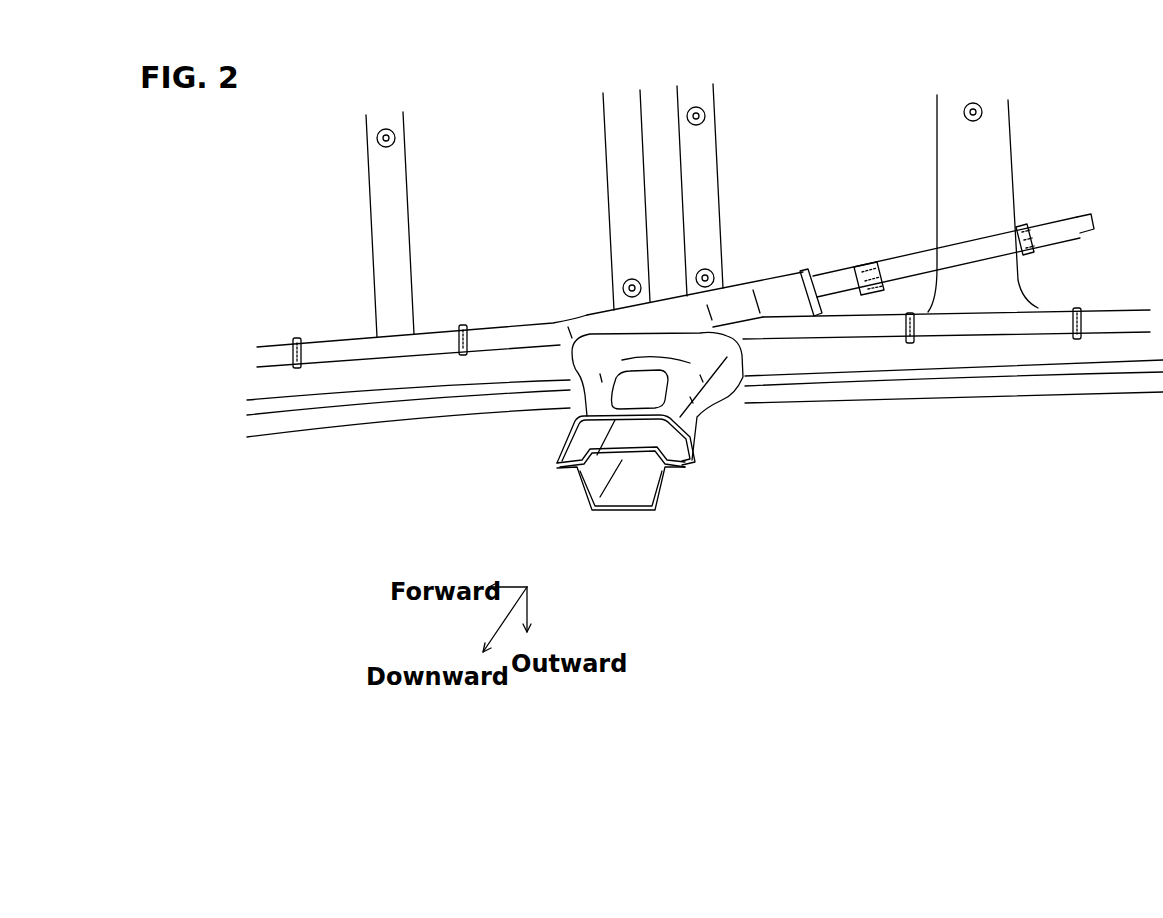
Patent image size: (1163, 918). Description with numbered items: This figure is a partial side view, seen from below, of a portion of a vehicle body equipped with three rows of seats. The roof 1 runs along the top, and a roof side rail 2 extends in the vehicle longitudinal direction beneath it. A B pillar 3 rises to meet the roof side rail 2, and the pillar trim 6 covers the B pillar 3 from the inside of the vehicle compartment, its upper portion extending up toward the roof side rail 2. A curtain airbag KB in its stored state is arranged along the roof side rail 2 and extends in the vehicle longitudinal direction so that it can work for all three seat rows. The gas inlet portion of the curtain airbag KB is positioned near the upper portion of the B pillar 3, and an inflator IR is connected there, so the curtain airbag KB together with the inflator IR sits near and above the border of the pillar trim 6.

The roof 1 is at (845, 125).
The roof side rail 2 is at (962, 374).
The B pillar 3 is at (625, 493).
The pillar trim 6 is at (697, 420).
The curtain airbag KB is at (427, 343).
The inflator IR is at (900, 262).